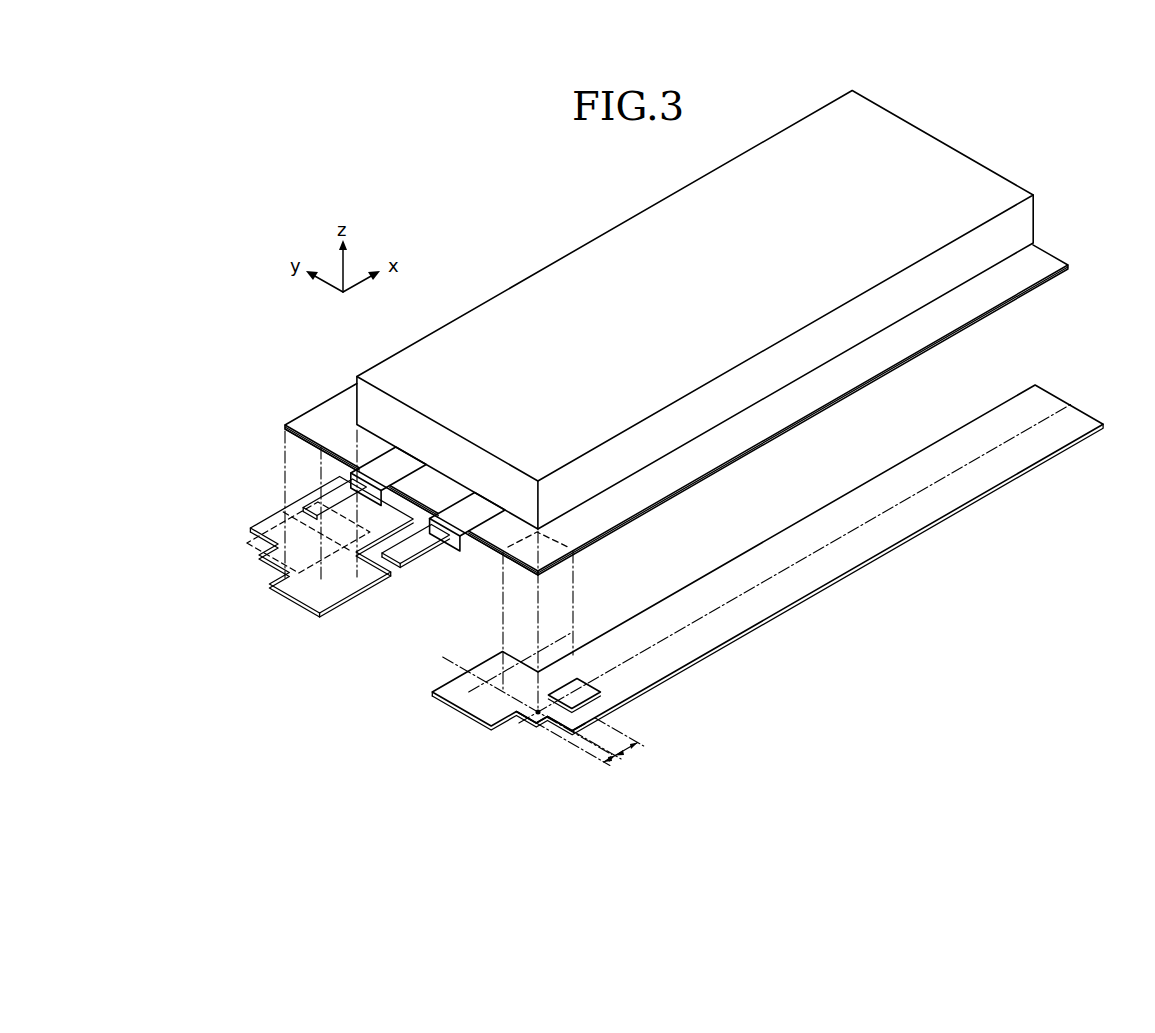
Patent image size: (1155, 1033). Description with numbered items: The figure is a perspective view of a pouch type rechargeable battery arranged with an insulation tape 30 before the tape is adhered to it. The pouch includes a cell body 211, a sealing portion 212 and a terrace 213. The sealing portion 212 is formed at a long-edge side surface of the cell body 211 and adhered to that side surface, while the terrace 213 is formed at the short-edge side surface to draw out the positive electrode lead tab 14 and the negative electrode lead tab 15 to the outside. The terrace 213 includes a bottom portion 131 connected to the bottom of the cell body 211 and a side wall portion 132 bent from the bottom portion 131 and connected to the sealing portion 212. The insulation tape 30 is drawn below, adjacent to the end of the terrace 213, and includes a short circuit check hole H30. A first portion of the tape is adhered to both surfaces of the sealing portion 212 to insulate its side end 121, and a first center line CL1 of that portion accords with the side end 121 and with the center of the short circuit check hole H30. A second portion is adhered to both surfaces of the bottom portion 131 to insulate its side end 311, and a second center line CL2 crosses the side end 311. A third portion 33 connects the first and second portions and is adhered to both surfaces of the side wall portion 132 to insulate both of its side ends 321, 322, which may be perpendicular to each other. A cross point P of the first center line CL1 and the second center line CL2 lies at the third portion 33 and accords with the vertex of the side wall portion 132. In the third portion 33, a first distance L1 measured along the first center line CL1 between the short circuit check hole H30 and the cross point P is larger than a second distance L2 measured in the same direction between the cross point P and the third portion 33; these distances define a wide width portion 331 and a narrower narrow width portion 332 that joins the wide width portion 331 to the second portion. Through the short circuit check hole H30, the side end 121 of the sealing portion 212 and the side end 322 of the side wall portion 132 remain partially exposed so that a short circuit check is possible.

The cell body 211 is at (921, 155).
The sealing portion 212 is at (692, 435).
The side end of the sealing portion 121 is at (966, 331).
The terrace 213 is at (410, 571).
The bottom portion 131 is at (412, 490).
The side wall portion 132 is at (488, 535).
The positive electrode lead tab 14 is at (410, 551).
The negative electrode lead tab 15 is at (318, 506).
The side end of the bottom portion 311 is at (478, 551).
The side end of the side wall portion 321 is at (520, 569).
The side end of the side wall portion 322 is at (555, 553).
The insulation tape 30 is at (763, 605).
The short circuit check hole H30 is at (600, 681).
The third portion 33 is at (535, 769).
The wide width portion 331 is at (570, 733).
The narrow width portion 332 is at (533, 728).
The first center line CL1 is at (836, 546).
The second center line CL2 is at (512, 700).
The cross point P is at (522, 722).
The first distance L1 is at (635, 750).
The second distance L2 is at (572, 750).